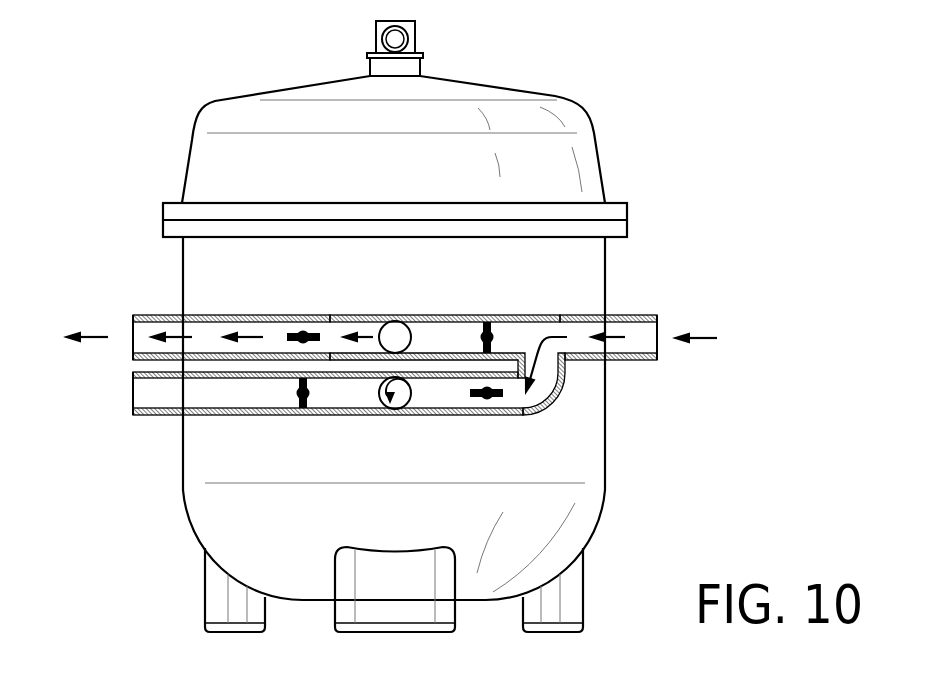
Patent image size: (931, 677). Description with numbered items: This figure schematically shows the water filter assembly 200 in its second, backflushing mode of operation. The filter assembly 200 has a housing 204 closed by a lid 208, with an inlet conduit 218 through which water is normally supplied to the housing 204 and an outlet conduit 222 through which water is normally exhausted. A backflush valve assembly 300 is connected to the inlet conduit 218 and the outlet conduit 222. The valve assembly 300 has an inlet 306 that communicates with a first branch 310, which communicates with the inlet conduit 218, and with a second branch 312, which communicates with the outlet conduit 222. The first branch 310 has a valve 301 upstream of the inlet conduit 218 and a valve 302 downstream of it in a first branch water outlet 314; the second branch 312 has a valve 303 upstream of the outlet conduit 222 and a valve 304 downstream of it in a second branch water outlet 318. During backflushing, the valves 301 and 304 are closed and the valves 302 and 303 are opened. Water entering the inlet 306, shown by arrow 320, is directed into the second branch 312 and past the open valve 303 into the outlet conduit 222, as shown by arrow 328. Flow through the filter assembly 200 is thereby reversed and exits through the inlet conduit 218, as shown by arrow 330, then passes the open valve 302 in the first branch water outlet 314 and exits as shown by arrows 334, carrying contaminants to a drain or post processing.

The water filter assembly 200 is at (766, 131).
The housing 204 is at (183, 507).
The lid 208 is at (593, 108).
The inlet conduit 218 is at (413, 339).
The outlet conduit 222 is at (380, 386).
The backflush valve assembly 300 is at (629, 378).
The valve 301 is at (495, 336).
The valve 302 is at (298, 322).
The valve 303 is at (487, 398).
The valve 304 is at (298, 393).
The inlet 306 is at (634, 317).
The first branch 310 is at (453, 317).
The second branch 312 is at (552, 400).
The first branch water outlet 314 is at (238, 316).
The second branch water outlet 318 is at (153, 414).
The arrow 320 is at (717, 338).
The arrow 328 is at (451, 388).
The arrow 330 is at (378, 340).
The arrows 334 is at (92, 338).